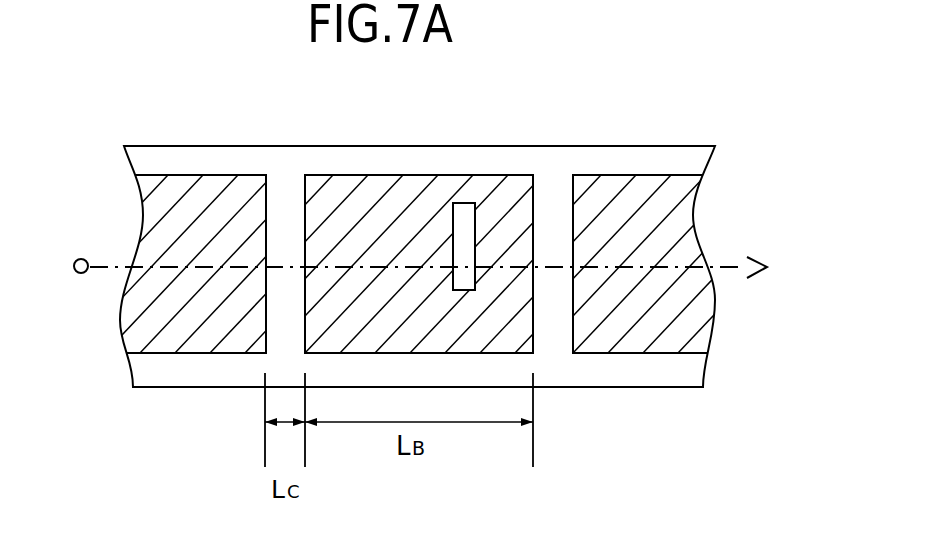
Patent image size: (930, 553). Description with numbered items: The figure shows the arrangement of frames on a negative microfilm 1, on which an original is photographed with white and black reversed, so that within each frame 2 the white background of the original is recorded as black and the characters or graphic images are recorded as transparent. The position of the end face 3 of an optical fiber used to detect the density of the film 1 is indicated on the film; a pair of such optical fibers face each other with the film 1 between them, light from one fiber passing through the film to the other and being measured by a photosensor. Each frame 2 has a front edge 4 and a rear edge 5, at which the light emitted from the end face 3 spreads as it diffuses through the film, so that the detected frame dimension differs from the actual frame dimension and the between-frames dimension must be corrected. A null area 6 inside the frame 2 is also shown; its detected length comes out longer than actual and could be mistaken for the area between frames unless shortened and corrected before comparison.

The microfilm 1 is at (623, 146).
The frame 2 is at (362, 175).
The optical fiber end face 3 is at (82, 273).
The front edge 4 is at (306, 202).
The rear edge 5 is at (536, 242).
The null area 6 is at (470, 203).